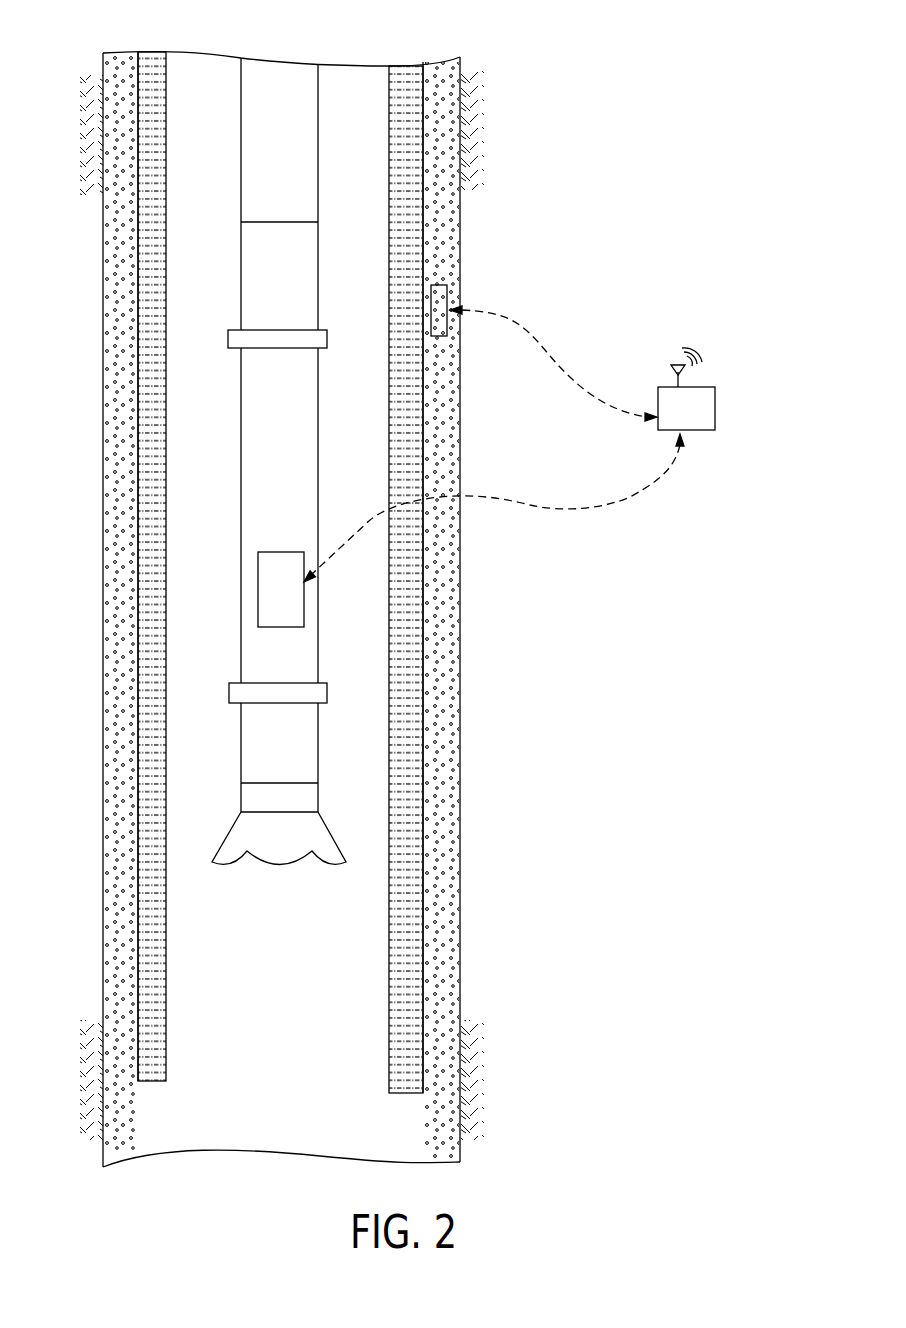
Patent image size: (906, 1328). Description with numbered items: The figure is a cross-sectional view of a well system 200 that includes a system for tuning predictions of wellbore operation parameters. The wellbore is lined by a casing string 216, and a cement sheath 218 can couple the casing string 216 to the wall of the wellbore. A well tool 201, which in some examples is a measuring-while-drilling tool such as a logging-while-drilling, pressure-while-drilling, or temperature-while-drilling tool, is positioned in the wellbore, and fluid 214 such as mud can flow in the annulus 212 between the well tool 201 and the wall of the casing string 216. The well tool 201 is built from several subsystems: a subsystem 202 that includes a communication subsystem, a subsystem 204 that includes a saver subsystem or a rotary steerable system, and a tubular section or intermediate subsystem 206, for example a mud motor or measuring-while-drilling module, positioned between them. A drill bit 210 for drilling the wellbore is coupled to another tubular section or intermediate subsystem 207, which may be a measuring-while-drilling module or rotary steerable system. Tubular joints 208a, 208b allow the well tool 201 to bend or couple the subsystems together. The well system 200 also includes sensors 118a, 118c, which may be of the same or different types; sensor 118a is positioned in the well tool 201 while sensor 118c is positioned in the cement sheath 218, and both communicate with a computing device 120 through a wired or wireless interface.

The well system 200 is at (556, 85).
The well tool 201 is at (258, 120).
The annulus 212 is at (203, 71).
The subsystem 202 is at (302, 290).
The intermediate subsystem 206 is at (257, 415).
The subsystem 204 is at (305, 747).
The intermediate subsystem 207 is at (310, 797).
The drill bit 210 is at (288, 846).
The tubular joint 208a is at (228, 338).
The tubular joint 208b is at (228, 693).
The casing string 216 is at (145, 472).
The cement sheath 218 is at (127, 557).
The fluid 214 is at (318, 1140).
The sensor 118a is at (304, 610).
The sensor 118c is at (448, 293).
The computing device 120 is at (715, 405).